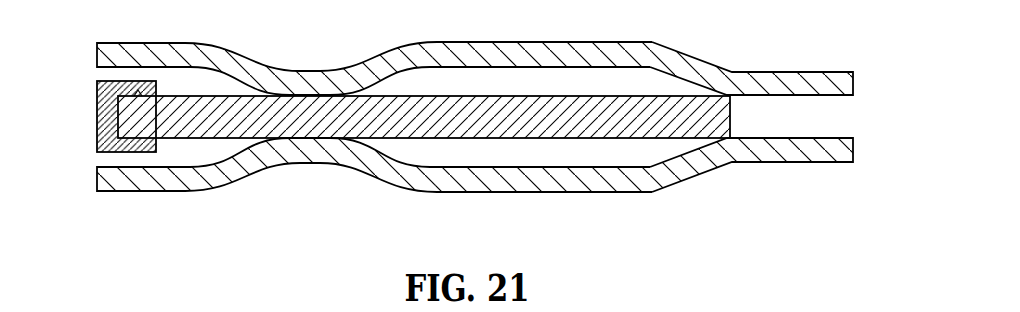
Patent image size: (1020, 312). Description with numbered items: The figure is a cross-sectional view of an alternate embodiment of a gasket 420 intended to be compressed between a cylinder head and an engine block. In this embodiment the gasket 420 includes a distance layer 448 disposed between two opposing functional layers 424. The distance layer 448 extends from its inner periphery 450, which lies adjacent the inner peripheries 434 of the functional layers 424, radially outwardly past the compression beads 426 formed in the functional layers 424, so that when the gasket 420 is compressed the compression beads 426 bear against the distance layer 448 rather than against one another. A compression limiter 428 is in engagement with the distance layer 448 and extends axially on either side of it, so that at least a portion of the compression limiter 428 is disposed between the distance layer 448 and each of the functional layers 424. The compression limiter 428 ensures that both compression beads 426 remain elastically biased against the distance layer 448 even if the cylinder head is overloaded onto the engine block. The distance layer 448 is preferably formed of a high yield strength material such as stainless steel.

The gasket 420 is at (740, 57).
The functional layers 424 is at (539, 38).
The compression beads 426 is at (307, 84).
The compression limiter 428 is at (418, 108).
The inner peripheries 434 is at (97, 57).
The distance layer 448 is at (713, 115).
The inner periphery 450 is at (115, 129).